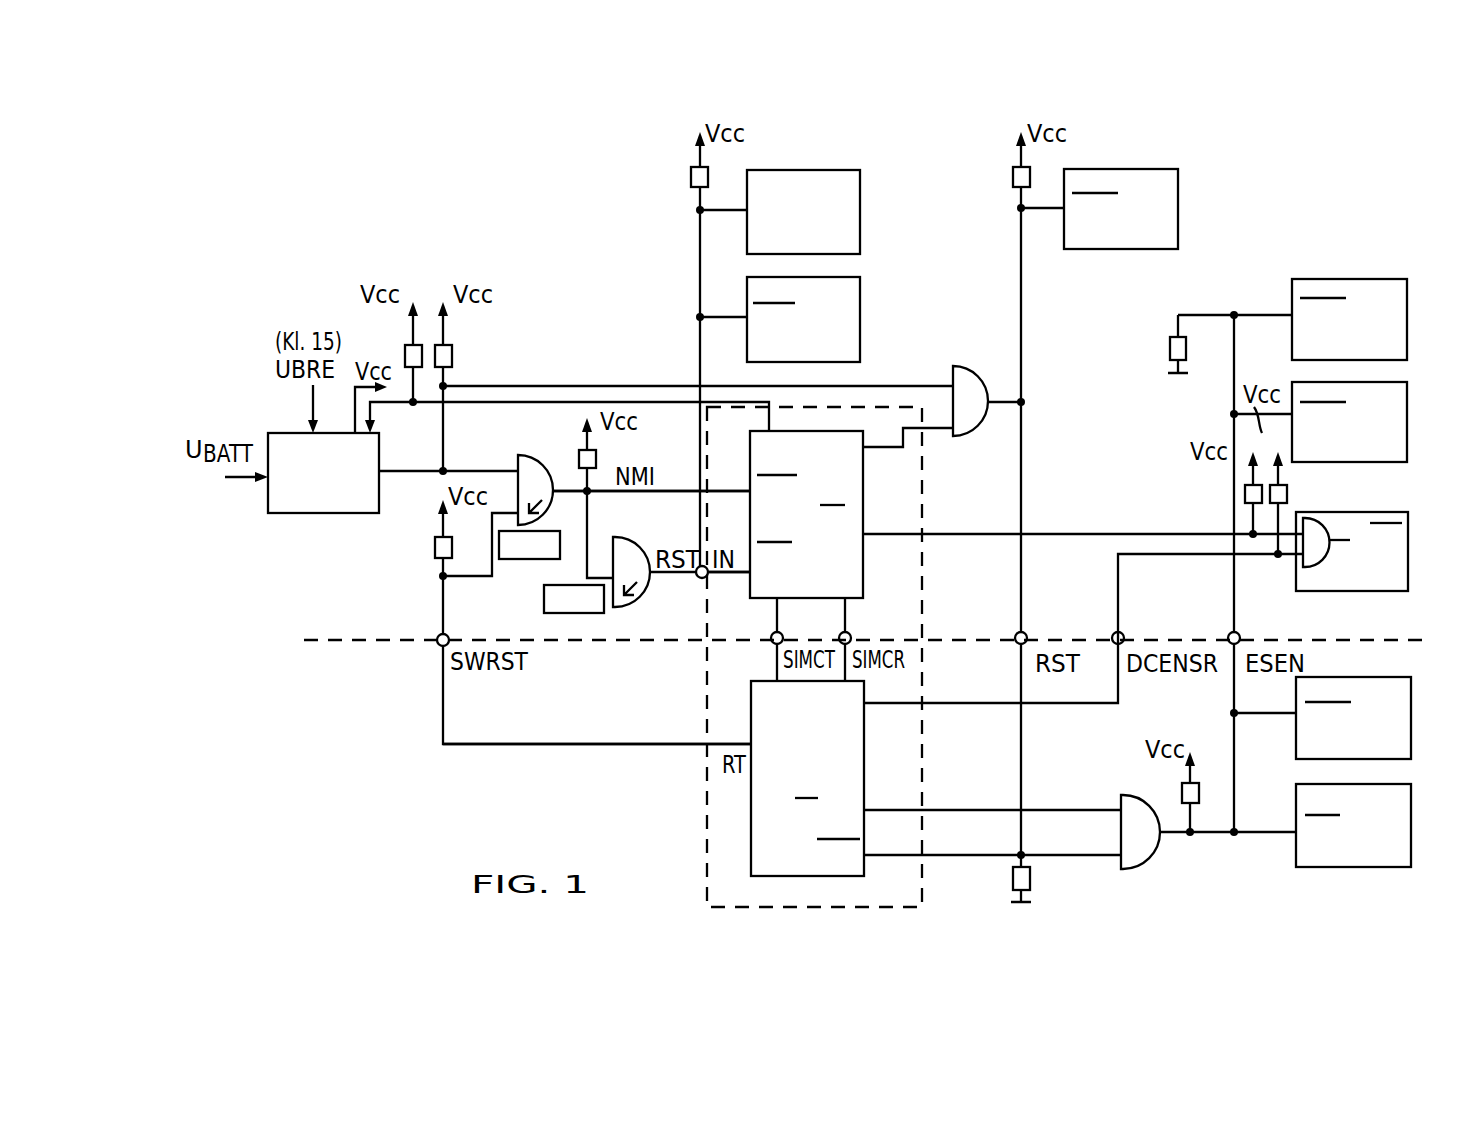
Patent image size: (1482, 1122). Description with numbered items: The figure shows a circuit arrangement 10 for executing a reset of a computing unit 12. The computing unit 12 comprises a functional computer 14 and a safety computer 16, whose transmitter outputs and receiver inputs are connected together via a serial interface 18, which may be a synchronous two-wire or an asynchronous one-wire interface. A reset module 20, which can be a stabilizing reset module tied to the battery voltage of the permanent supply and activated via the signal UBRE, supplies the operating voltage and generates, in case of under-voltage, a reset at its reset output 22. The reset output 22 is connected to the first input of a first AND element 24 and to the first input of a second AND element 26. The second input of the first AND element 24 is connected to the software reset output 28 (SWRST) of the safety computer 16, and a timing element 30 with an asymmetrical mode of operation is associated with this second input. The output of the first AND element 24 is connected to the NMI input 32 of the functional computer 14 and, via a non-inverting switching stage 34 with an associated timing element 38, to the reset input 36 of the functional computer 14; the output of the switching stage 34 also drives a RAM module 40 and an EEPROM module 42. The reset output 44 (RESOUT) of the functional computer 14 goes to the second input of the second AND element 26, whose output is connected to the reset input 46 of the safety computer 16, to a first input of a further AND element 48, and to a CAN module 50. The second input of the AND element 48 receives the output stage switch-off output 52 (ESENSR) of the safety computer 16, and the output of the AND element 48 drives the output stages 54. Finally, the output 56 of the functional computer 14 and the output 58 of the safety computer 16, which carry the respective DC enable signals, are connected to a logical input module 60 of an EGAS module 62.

The circuit arrangement 10 is at (352, 762).
The computing unit 12 is at (707, 815).
The functional computer 14 is at (820, 516).
The safety computer 16 is at (823, 778).
The serial interface 18 is at (855, 626).
The reset module 20 is at (302, 514).
The reset output 22 is at (384, 474).
The first AND element 24 is at (526, 461).
The second AND element 26 is at (962, 376).
The software reset output 28 is at (751, 741).
The timing element 30 is at (513, 560).
The NMI input 32 is at (750, 488).
The non-inverting switching stage 34 is at (626, 539).
The reset input 36 is at (750, 579).
The timing element 38 is at (549, 614).
The RAM module 40 is at (861, 295).
The EEPROM module 42 is at (861, 203).
The reset output 44 is at (866, 447).
The reset input 46 is at (866, 857).
The AND element 48 is at (1137, 857).
The CAN module 50 is at (1178, 190).
The output stage switch-off output 52 is at (866, 809).
The output stages 54 is at (1407, 302).
The output 56 is at (866, 533).
The output 58 is at (866, 703).
The logical input module 60 is at (1308, 522).
The EGAS module 62 is at (1408, 530).